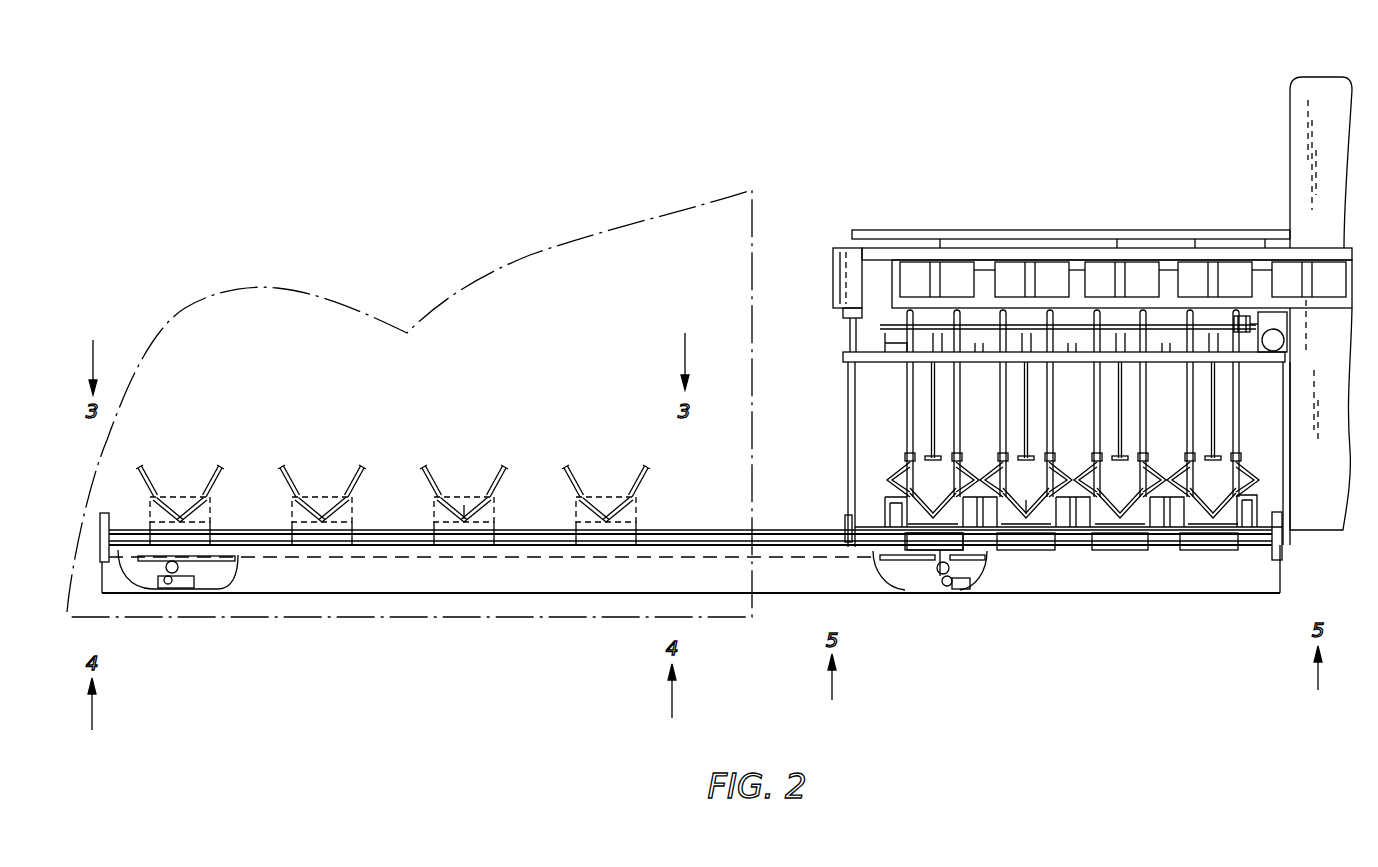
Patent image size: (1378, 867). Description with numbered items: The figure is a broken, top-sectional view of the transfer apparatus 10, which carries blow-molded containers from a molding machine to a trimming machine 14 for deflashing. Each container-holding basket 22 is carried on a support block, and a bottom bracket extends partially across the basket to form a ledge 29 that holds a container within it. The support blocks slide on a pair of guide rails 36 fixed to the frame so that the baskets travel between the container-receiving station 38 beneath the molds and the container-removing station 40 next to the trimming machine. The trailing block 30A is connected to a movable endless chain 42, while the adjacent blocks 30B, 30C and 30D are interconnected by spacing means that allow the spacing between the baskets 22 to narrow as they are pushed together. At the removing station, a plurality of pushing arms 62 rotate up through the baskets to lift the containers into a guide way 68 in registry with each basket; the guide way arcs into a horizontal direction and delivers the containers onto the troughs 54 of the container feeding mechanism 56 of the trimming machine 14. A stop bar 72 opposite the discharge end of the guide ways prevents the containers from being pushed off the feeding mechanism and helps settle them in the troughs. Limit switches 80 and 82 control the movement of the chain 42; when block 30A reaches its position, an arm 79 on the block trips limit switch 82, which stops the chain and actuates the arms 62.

The transfer apparatus 10 is at (990, 603).
The trimming machine 14 is at (1285, 98).
The basket 22 is at (220, 488).
The ledge 29 is at (464, 502).
The trailing block 30A is at (965, 547).
The adjacent block 30B is at (345, 548).
The adjacent block 30C is at (488, 560).
The adjacent block 30D is at (1213, 552).
The guide rails 36 is at (765, 540).
The container-receiving station 38 is at (403, 446).
The container-removing station 40 is at (1070, 586).
The endless chain 42 is at (217, 552).
The troughs 54 is at (1008, 262).
The container feeding mechanism 56 is at (1082, 252).
The arms 62 is at (931, 398).
The guide way 68 is at (1060, 402).
The bar 72 is at (1040, 231).
The arm 79 is at (178, 567).
The limit switch 80 is at (164, 568).
The limit switch 82 is at (952, 578).